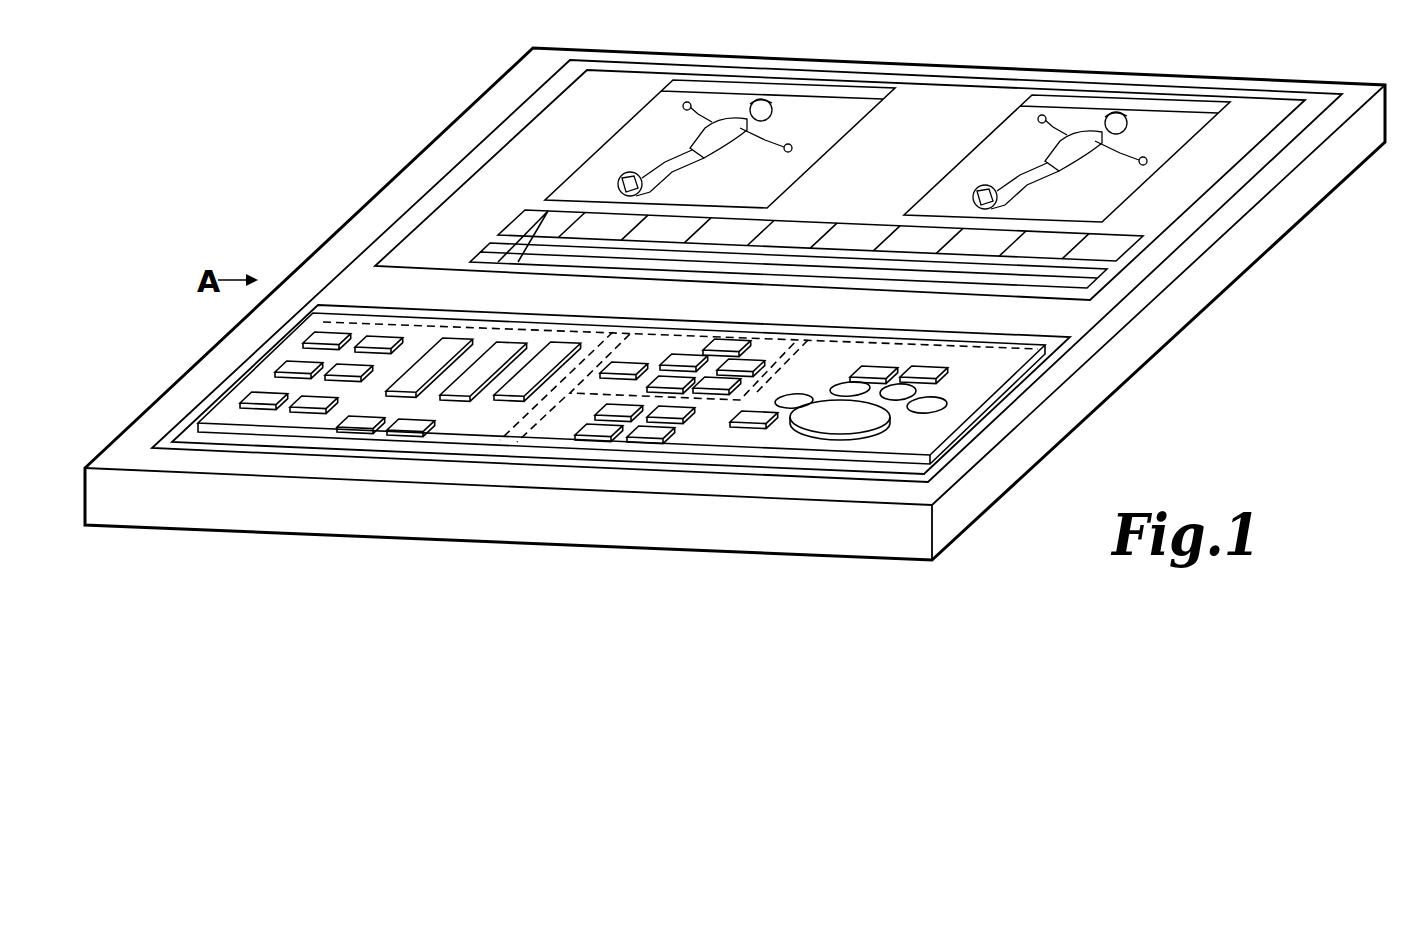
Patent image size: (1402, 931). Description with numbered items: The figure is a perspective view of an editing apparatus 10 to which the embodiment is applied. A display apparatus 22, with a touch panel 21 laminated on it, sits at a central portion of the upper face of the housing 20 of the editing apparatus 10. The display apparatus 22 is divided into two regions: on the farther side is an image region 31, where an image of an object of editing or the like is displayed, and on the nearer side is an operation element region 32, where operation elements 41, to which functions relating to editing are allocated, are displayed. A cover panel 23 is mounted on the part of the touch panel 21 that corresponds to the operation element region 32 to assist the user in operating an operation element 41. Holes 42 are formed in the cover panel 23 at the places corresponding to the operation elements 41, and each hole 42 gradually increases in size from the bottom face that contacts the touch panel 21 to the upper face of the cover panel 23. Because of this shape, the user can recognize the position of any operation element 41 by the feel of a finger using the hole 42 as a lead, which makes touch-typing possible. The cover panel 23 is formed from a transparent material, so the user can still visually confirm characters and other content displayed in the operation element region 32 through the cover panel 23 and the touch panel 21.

The editing apparatus 10 is at (735, 350).
The housing 20 is at (622, 549).
The touch panel 21 is at (814, 185).
The display apparatus 22 is at (333, 272).
The cover panel 23 is at (620, 380).
The image region 31 is at (1215, 168).
The operation element region 32 is at (1072, 347).
The operation elements 41 is at (389, 368).
The holes 42 is at (333, 343).